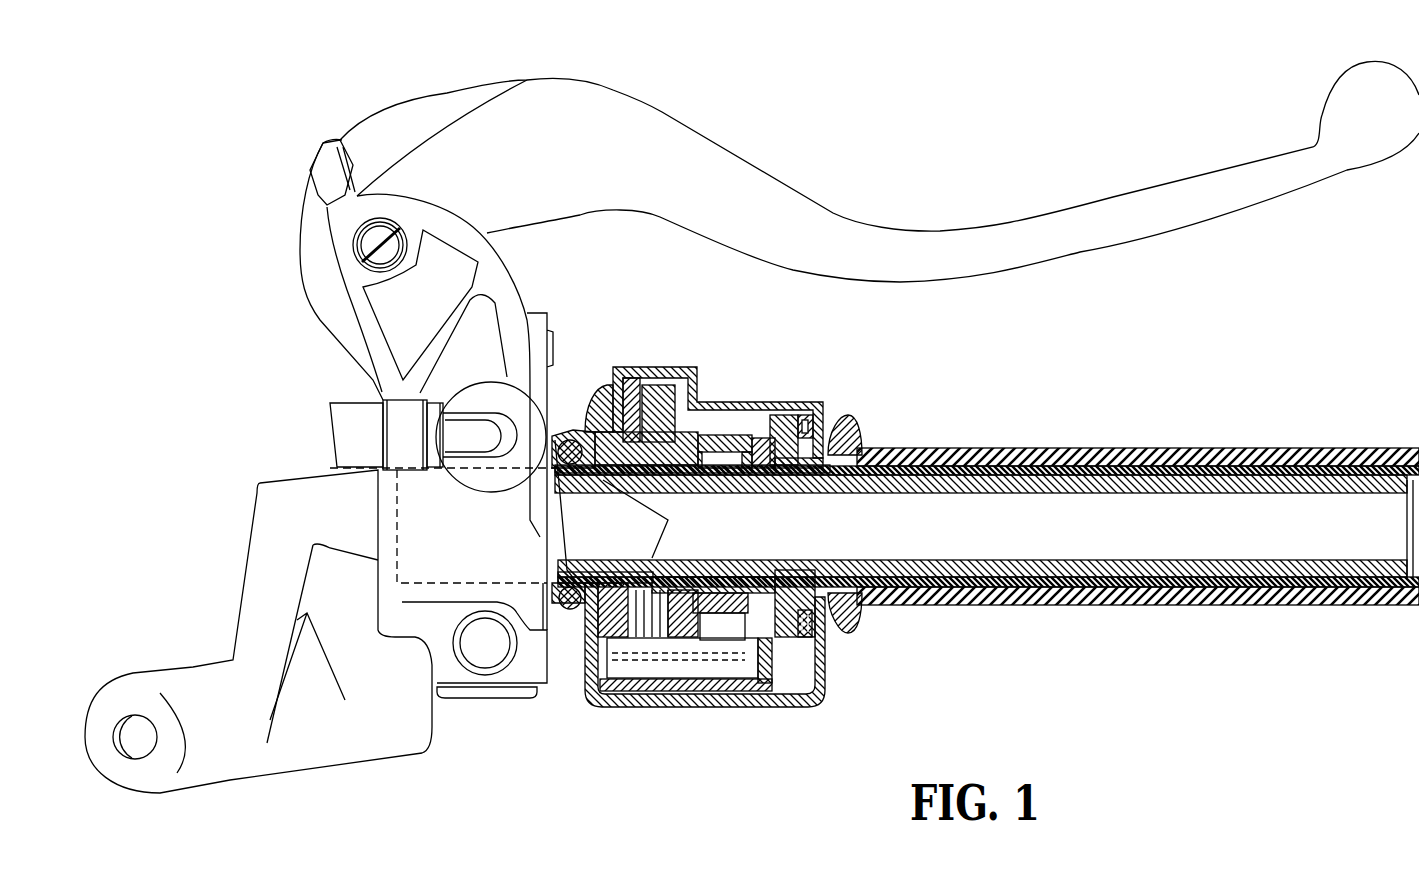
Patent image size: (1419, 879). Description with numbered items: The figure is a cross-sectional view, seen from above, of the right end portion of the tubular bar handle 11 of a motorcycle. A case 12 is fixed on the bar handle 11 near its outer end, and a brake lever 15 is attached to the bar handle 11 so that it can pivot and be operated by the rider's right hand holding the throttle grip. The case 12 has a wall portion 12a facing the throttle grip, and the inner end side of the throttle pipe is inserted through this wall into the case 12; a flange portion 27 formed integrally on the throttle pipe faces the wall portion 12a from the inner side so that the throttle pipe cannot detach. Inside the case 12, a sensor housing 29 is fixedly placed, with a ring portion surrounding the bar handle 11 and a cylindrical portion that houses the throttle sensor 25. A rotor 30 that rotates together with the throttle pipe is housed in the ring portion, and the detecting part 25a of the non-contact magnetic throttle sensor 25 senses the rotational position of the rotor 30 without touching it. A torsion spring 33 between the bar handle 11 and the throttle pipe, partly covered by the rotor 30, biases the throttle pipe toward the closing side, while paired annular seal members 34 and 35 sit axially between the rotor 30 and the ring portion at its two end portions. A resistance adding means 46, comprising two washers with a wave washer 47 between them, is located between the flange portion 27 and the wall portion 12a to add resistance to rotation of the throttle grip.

The bar handle 11 is at (1053, 487).
The case 12 is at (745, 402).
The wall portion 12a is at (853, 433).
The brake lever 15 is at (1000, 240).
The throttle sensor 25 is at (705, 707).
The detecting part 25a is at (588, 640).
The flange portion 27 is at (785, 417).
The sensor housing 29 is at (606, 384).
The rotor 30 is at (650, 480).
The torsion spring 33 is at (748, 490).
The annular seal member 34 is at (698, 432).
The annular seal member 35 is at (600, 482).
The resistance adding means 46 is at (805, 641).
The wave washer 47 is at (803, 423).